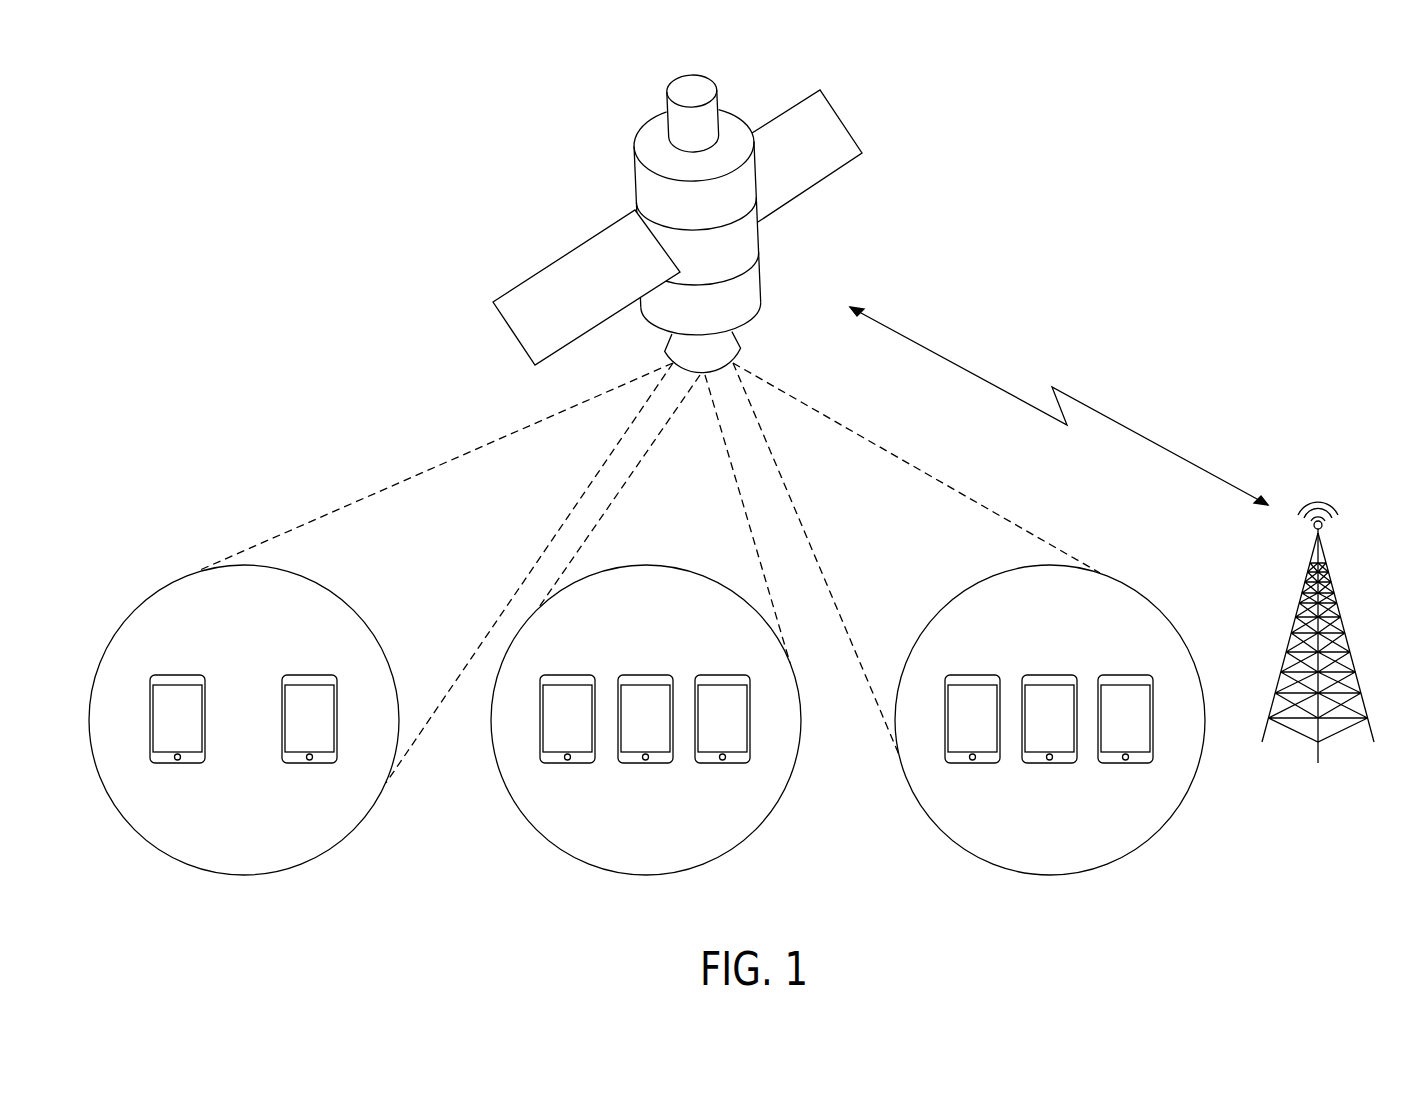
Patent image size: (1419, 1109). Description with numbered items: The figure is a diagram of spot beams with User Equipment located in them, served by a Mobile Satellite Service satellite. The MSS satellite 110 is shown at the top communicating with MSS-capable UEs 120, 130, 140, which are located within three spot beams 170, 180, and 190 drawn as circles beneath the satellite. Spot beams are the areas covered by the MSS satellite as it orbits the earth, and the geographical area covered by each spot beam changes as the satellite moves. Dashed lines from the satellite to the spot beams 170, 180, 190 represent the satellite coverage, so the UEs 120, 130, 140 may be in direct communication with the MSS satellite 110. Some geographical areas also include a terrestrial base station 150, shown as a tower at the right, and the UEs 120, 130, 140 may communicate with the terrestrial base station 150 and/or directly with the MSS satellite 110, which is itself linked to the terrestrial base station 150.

The MSS satellite 110 is at (668, 93).
The MSS-capable UEs 120 is at (178, 675).
The MSS-capable UEs 130 is at (568, 675).
The MSS-capable UEs 140 is at (972, 675).
The terrestrial base station 150 is at (1348, 651).
The spot beam 170 is at (242, 876).
The spot beam 180 is at (645, 877).
The spot beam 190 is at (1050, 877).